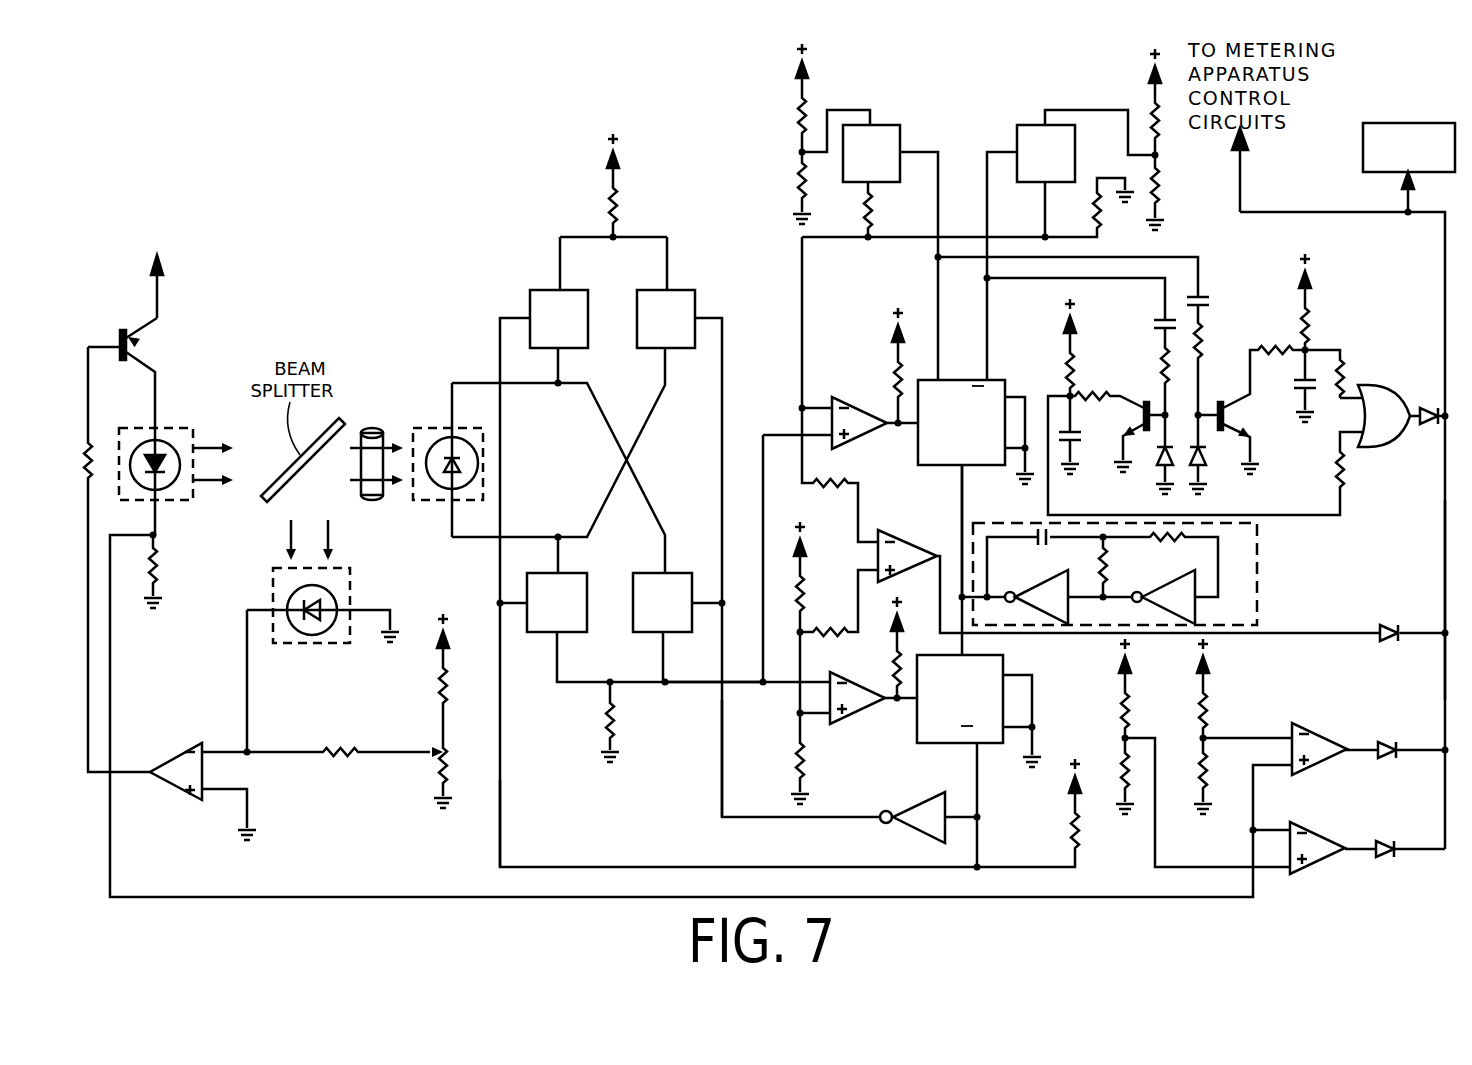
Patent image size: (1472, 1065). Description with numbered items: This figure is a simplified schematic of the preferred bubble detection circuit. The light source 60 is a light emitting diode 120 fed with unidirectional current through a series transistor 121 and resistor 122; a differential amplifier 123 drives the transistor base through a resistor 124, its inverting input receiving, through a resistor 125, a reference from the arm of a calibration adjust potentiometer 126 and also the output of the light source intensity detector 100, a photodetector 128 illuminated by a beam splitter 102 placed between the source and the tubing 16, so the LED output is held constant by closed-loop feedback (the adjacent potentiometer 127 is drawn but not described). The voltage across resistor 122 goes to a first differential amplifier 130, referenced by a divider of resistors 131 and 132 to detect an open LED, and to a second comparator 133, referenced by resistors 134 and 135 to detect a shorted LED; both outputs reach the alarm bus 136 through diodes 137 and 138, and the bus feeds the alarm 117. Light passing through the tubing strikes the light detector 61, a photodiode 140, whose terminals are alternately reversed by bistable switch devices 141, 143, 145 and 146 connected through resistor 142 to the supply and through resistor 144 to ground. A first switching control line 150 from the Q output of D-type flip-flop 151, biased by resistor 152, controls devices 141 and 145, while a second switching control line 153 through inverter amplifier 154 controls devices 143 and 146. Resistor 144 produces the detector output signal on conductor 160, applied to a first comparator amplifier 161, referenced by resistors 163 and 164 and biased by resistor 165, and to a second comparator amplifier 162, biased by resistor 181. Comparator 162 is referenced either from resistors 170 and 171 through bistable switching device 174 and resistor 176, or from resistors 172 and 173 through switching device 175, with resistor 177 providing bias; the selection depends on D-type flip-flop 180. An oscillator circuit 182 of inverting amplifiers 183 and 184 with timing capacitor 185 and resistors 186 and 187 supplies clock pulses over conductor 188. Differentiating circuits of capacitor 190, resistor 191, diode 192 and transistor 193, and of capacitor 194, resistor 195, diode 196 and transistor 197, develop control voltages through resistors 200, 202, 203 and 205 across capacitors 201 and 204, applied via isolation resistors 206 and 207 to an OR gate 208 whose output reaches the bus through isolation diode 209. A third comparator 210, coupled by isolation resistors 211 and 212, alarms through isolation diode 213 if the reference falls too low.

The tubing 16 is at (372, 432).
The light source 60 is at (178, 428).
The light detector 61 is at (424, 428).
The light source intensity detector 100 is at (350, 592).
The beam splitter 102 is at (290, 478).
The alarm 117 is at (1430, 123).
The light emitting diode 120 is at (165, 480).
The transistor 121 is at (120, 334).
The resistor 122 is at (160, 563).
The differential amplifier 123 is at (175, 790).
The resistor 124 is at (95, 478).
The resistor 125 is at (345, 748).
The calibration adjust potentiometer 126 is at (435, 768).
The potentiometer 127 is at (437, 675).
The photodetector 128 is at (312, 635).
The first differential amplifier 130 is at (1310, 835).
The resistor 131 is at (1121, 708).
The resistor 132 is at (1120, 782).
The second comparator 133 is at (1315, 740).
The resistor 134 is at (1208, 708).
The resistor 135 is at (1198, 782).
The alarm bus 136 is at (1445, 552).
The diode 137 is at (1385, 744).
The diode 138 is at (1387, 840).
The photodiode 140 is at (443, 483).
The first bistable switch device 141 is at (543, 292).
The resistor 142 is at (625, 208).
The second bistable switch device 143 is at (676, 628).
The resistor 144 is at (603, 720).
The third bistable switch device 145 is at (542, 632).
The fourth bistable switch device 146 is at (685, 292).
The first switching control line 150 is at (497, 830).
The D-type flip-flop 151 is at (920, 728).
The resistor 152 is at (1070, 825).
The second switching control line 153 is at (720, 772).
The inverter amplifier 154 is at (920, 812).
The conductor 160 is at (708, 685).
The first comparator amplifier 161 is at (853, 710).
The second comparator amplifier 162 is at (855, 400).
The resistor 163 is at (806, 590).
The resistor 164 is at (795, 762).
The resistor 165 is at (893, 665).
The resistor 170 is at (795, 118).
The resistor 171 is at (795, 178).
The resistor 172 is at (1165, 125).
The resistor 173 is at (1163, 190).
The first bistable switching device 174 is at (896, 125).
The second bistable switching device 175 is at (1036, 125).
The resistor 176 is at (876, 212).
The resistor 177 is at (1093, 212).
The D-type flip-flop 180 is at (963, 382).
The resistor 181 is at (893, 368).
The oscillator circuit 182 is at (1257, 580).
The inverting amplifier 183 is at (1040, 588).
The inverting amplifier 184 is at (1168, 590).
The capacitor 185 is at (1035, 542).
The resistor 186 is at (1098, 578).
The resistor 187 is at (1168, 542).
The conductor 188 is at (961, 490).
The capacitor 190 is at (1158, 322).
The resistor 191 is at (1160, 372).
The diode 192 is at (1158, 460).
The transistor 193 is at (1143, 413).
The capacitor 194 is at (1207, 298).
The resistor 195 is at (1207, 345).
The diode 196 is at (1207, 460).
The transistor 197 is at (1235, 418).
The resistor 200 is at (1095, 394).
The capacitor 201 is at (1078, 440).
The resistor 202 is at (1062, 362).
The resistor 203 is at (1280, 350).
The capacitor 204 is at (1290, 378).
The resistor 205 is at (1312, 325).
The isolation resistor 206 is at (1348, 368).
The isolation resistor 207 is at (1348, 465).
The OR gate 208 is at (1385, 412).
The isolation diode 209 is at (1428, 426).
The third comparator 210 is at (900, 540).
The isolation resistor 211 is at (832, 480).
The isolation resistor 212 is at (820, 638).
The isolation diode 213 is at (1388, 626).